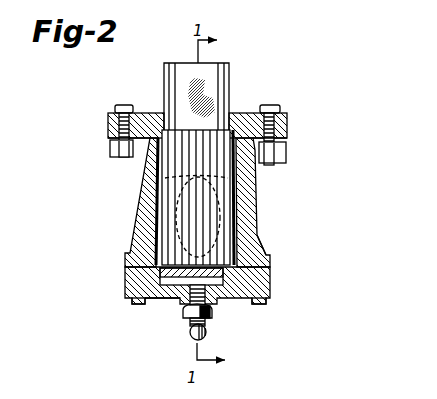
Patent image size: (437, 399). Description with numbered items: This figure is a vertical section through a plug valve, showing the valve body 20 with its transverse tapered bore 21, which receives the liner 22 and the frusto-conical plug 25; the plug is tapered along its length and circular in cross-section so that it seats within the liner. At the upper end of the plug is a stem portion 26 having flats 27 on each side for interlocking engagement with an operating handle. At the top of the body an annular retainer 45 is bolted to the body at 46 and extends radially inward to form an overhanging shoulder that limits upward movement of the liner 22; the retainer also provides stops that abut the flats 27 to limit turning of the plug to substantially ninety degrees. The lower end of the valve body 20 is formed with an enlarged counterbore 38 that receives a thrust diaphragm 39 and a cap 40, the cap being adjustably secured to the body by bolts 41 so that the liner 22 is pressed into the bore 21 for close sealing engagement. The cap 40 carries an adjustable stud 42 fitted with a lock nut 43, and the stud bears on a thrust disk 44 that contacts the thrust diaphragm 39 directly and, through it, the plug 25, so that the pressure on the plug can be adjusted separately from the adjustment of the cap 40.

The valve body 20 is at (257, 181).
The tapered bore 21 is at (253, 223).
The liner 22 is at (262, 244).
The frusto-conical plug 25 is at (172, 218).
The stem portion 26 is at (229, 77).
The flats 27 is at (193, 76).
The enlarged counterbore 38 is at (268, 276).
The thrust diaphragm 39 is at (128, 296).
The cap 40 is at (162, 300).
The bolts 41 is at (140, 308).
The adjustable stud 42 is at (189, 338).
The lock nut 43 is at (207, 314).
The thrust disk 44 is at (234, 301).
The annular retainer 45 is at (247, 109).
The bolts 46 is at (121, 104).